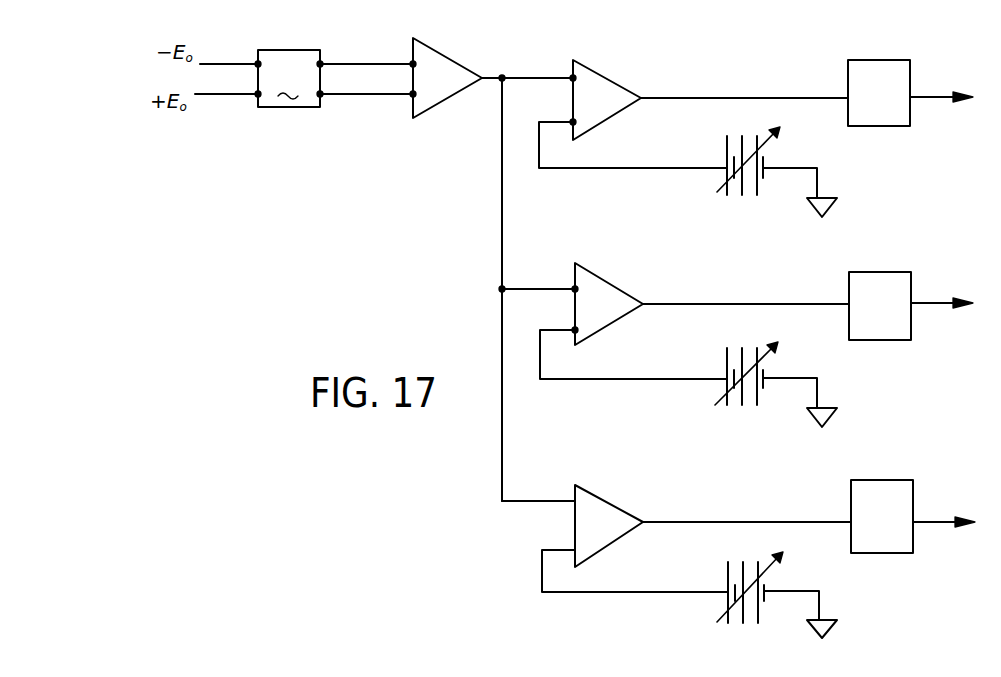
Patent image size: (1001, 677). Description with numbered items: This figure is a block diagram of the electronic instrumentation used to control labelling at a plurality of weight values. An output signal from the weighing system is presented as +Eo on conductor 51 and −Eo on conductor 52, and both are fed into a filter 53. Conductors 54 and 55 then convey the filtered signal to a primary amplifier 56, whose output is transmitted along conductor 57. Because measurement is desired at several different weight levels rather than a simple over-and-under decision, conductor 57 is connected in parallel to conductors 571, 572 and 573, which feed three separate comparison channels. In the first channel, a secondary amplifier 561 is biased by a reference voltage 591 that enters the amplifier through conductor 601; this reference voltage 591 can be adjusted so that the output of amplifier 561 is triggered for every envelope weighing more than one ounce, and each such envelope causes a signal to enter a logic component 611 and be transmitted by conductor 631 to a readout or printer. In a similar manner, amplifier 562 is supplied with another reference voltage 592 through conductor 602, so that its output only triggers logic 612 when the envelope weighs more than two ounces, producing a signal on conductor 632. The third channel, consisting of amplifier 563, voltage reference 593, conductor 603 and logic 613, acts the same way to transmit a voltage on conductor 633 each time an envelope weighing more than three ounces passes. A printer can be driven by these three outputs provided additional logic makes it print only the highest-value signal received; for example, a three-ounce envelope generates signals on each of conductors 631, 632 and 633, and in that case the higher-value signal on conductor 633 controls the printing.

The conductor 51 is at (228, 95).
The conductor 52 is at (236, 64).
The filter 53 is at (289, 78).
The conductor 54 is at (357, 63).
The conductor 55 is at (378, 95).
The primary amplifier 56 is at (438, 72).
The conductor 57 is at (494, 77).
The conductor 571 is at (553, 77).
The conductor 572 is at (527, 288).
The conductor 573 is at (538, 500).
The secondary amplifier 561 is at (605, 93).
The amplifier 562 is at (605, 298).
The amplifier 563 is at (603, 518).
The conductor 601 is at (594, 170).
The conductor 602 is at (600, 381).
The conductor 603 is at (603, 592).
The reference voltage 591 is at (733, 190).
The reference voltage 592 is at (750, 405).
The voltage reference 593 is at (752, 620).
The logic component 611 is at (872, 77).
The logic 612 is at (905, 243).
The logic 613 is at (917, 443).
The conductor 631 is at (935, 93).
The conductor 632 is at (937, 298).
The conductor 633 is at (933, 518).